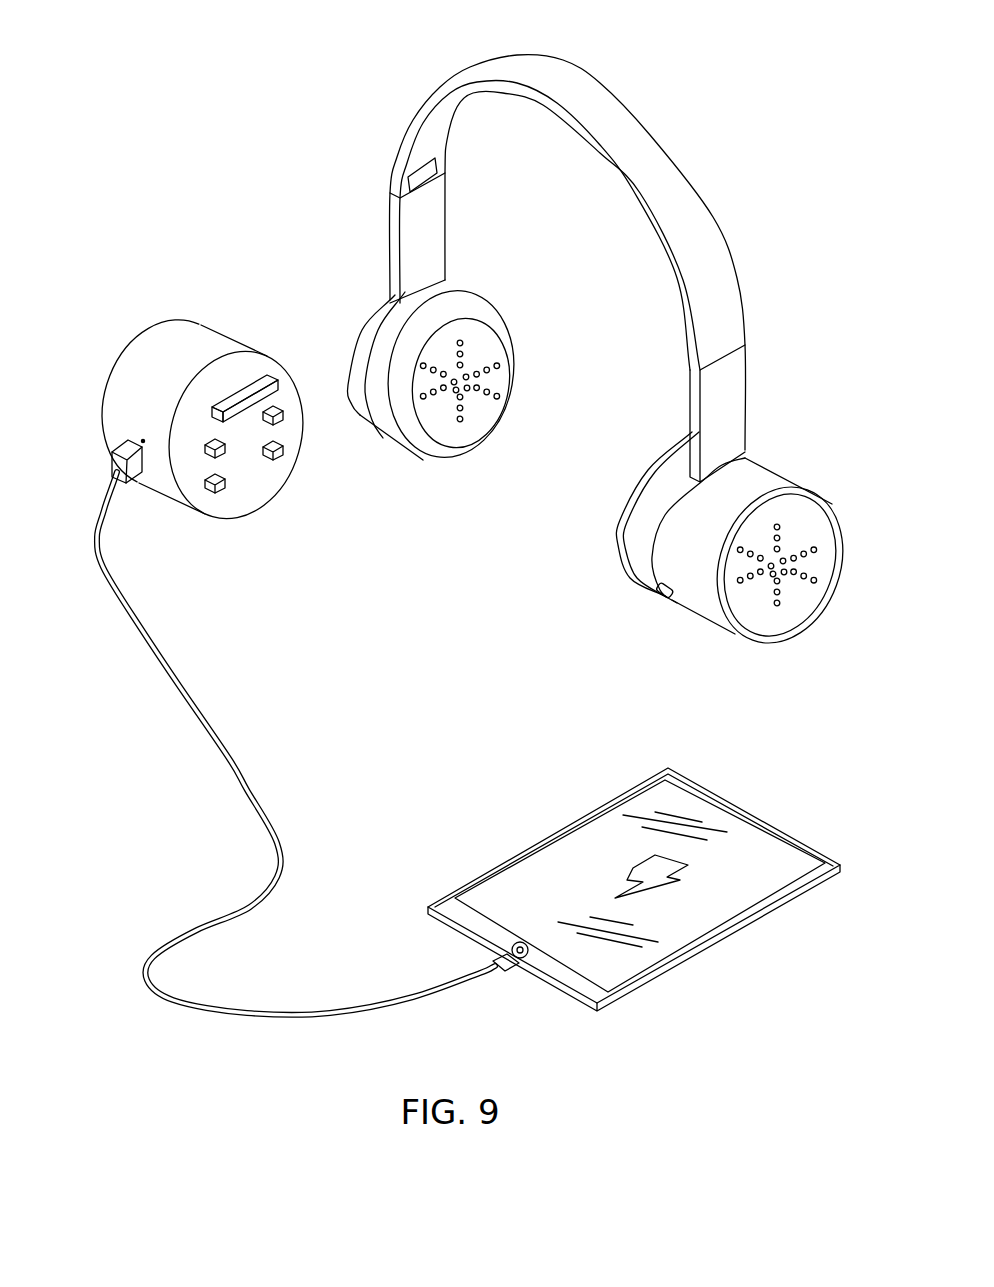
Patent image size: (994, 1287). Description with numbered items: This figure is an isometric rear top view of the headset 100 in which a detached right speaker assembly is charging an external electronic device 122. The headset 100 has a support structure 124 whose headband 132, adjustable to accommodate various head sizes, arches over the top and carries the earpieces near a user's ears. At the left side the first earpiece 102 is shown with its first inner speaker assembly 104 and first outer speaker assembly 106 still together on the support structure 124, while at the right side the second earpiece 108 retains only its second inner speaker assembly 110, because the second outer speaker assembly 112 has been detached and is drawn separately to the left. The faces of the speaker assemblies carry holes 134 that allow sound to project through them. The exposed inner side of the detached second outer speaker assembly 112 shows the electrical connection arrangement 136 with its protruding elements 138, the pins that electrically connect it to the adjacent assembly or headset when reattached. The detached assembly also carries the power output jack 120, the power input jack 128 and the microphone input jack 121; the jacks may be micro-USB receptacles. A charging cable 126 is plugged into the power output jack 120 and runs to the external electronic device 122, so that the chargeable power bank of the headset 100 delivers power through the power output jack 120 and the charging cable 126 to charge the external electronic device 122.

The headset 100 is at (712, 107).
The first earpiece 102 is at (818, 388).
The first inner speaker assembly 104 is at (620, 573).
The first outer speaker assembly 106 is at (722, 640).
The second earpiece 108 is at (315, 225).
The second inner speaker assembly 110 is at (427, 467).
The second outer speaker assembly 112 is at (200, 322).
The power output jack 120 is at (146, 463).
The microphone input jack 121 is at (142, 437).
The external electronic device 122 is at (532, 832).
The support structure 124 is at (718, 215).
The charging cable 126 is at (260, 772).
The power input jack 128 is at (113, 438).
The headband 132 is at (615, 100).
The holes 134 is at (487, 337).
The electrical connection arrangement 136 is at (295, 475).
The protruding elements 138 is at (237, 413).